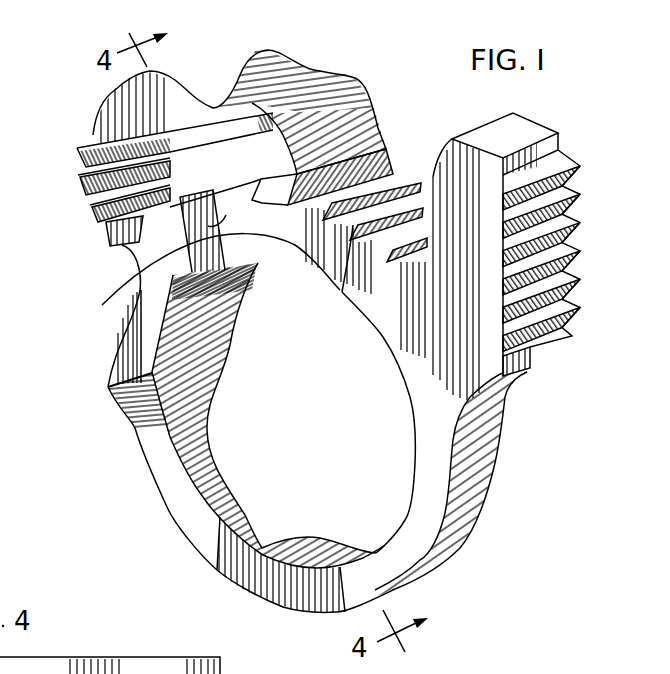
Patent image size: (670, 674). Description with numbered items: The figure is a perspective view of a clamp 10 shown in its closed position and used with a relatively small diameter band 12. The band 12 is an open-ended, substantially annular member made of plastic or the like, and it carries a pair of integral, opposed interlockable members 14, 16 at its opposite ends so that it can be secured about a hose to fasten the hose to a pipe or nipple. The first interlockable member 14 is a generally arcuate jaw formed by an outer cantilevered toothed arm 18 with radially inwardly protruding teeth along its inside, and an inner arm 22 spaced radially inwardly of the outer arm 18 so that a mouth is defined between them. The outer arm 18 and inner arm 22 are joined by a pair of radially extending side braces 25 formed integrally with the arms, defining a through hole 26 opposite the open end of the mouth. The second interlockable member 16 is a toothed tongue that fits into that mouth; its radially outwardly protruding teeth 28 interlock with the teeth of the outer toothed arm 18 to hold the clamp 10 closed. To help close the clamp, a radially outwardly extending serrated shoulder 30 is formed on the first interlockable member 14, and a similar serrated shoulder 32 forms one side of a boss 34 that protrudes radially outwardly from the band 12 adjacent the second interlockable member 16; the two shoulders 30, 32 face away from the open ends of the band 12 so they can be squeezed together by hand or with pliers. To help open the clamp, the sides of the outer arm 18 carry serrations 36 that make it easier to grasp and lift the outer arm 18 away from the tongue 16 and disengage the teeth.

The clamp 10 is at (158, 513).
The band 12 is at (283, 573).
The first interlockable member 14 is at (333, 71).
The second interlockable member 16 is at (418, 174).
The outer cantilevered toothed arm 18 is at (282, 157).
The inner arm 22 is at (257, 250).
The side braces 25 is at (150, 237).
The through hole 26 is at (138, 275).
The teeth 28 is at (378, 247).
The serrated shoulder 30 is at (80, 176).
The serrated shoulder 32 is at (550, 276).
The boss 34 is at (480, 230).
The serrations 36 is at (160, 147).